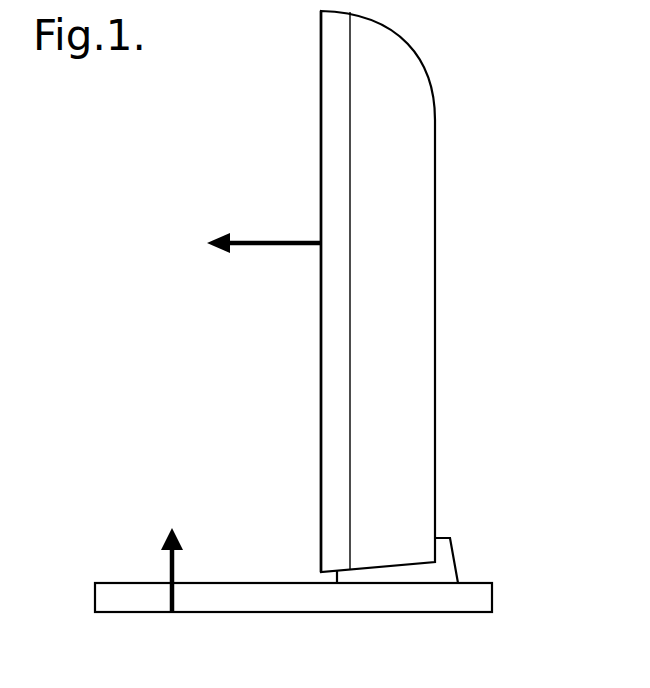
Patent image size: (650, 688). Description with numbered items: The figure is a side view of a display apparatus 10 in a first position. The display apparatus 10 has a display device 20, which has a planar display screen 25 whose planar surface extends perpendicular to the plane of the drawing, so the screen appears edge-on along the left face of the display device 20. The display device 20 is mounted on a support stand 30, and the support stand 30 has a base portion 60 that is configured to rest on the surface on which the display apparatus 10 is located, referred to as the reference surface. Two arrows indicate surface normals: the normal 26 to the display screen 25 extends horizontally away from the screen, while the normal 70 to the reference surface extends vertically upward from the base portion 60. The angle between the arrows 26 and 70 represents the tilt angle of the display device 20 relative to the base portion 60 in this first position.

The display apparatus 10 is at (180, 329).
The display device 20 is at (411, 182).
The display screen 25 is at (320, 146).
The normal to the display screen 26 is at (244, 242).
The support stand 30 is at (283, 548).
The base portion 60 is at (429, 597).
The normal to the surface 70 is at (171, 555).